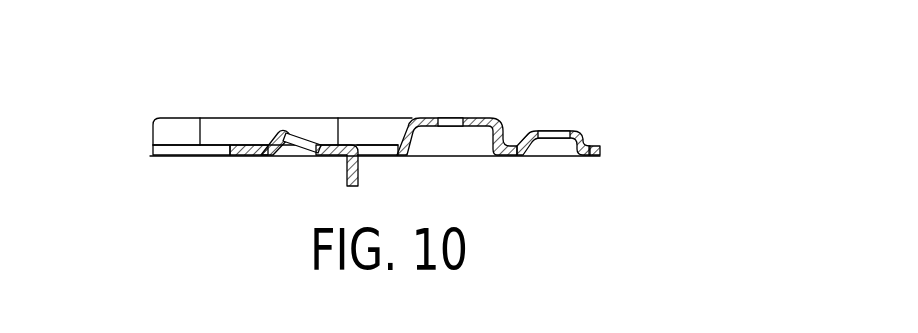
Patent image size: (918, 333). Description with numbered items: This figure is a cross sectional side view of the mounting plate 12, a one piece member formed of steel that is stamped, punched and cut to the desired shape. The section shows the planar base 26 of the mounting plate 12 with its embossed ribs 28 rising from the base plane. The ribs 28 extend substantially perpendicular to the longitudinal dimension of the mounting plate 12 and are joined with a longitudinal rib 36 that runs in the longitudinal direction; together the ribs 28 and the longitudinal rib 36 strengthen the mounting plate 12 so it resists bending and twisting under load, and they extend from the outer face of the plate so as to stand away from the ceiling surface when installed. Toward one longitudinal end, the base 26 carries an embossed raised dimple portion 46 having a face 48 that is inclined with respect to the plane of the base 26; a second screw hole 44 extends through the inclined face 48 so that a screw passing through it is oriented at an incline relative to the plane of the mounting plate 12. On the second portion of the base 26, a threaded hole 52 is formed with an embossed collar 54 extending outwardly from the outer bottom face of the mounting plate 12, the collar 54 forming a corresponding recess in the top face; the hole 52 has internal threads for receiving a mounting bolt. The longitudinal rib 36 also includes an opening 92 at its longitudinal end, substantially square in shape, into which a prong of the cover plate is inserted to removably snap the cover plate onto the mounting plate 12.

The mounting plate 12 is at (448, 85).
The planar base 26 is at (152, 154).
The embossed ribs 28 is at (201, 133).
The longitudinal rib 36 is at (473, 120).
The second screw hole 44 is at (300, 147).
The embossed raised dimple portion 46 is at (275, 138).
The inclined face 48 is at (285, 142).
The threaded hole 52 is at (554, 131).
The embossed collar 54 is at (586, 136).
The opening 92 is at (448, 128).